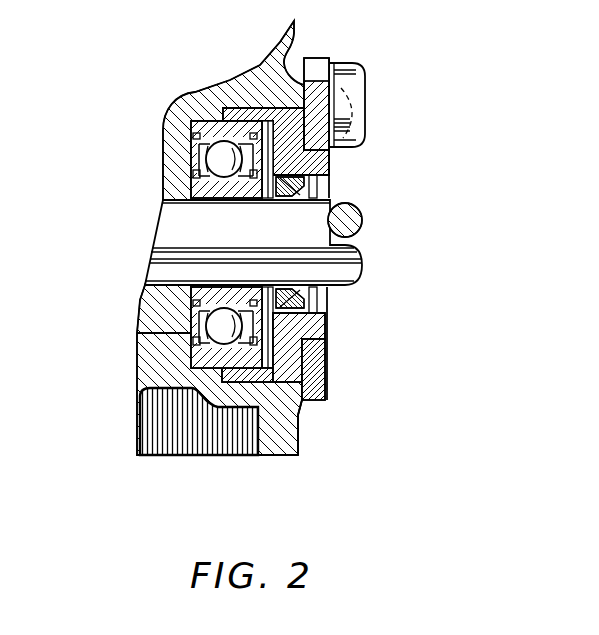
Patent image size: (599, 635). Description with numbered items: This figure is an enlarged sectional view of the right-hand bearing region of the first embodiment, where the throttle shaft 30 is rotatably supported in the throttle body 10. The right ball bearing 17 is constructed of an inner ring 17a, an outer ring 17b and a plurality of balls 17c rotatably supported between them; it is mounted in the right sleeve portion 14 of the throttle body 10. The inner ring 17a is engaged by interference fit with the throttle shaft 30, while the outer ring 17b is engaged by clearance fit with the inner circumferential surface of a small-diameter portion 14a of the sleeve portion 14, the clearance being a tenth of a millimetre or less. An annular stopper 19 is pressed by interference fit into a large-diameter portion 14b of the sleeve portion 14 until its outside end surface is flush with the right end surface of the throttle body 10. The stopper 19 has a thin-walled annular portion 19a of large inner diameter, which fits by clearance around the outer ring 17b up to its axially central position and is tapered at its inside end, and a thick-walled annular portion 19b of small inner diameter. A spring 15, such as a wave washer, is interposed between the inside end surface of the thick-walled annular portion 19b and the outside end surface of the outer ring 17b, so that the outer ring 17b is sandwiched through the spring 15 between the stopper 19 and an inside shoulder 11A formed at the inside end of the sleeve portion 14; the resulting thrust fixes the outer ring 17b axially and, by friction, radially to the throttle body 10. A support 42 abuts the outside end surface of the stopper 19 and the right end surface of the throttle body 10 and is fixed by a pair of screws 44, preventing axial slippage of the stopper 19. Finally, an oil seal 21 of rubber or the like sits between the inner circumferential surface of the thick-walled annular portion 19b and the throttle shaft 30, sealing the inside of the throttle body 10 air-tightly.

The throttle body 10 is at (246, 80).
The inside shoulder 11A is at (165, 350).
The right sleeve portion 14 is at (203, 117).
The small-diameter portion 14a is at (210, 382).
The large-diameter portion 14b is at (300, 452).
The spring 15 is at (310, 133).
The right ball bearing 17 is at (203, 128).
The inner ring 17a is at (213, 188).
The outer ring 17b is at (194, 133).
The balls 17c is at (220, 162).
The annular stopper 19 is at (328, 332).
The thin-walled annular portion 19a is at (302, 412).
The thick-walled annular portion 19b is at (288, 372).
The oil seal 21 is at (313, 308).
The throttle shaft 30 is at (350, 263).
The support 42 is at (367, 131).
The screws 44 is at (363, 104).